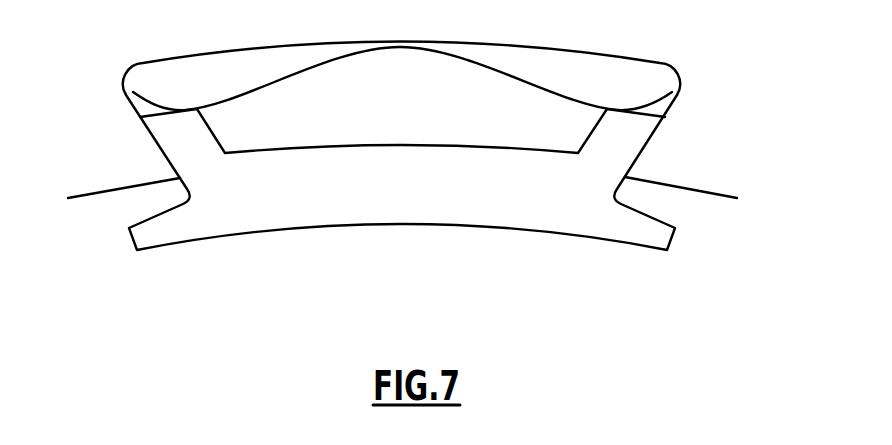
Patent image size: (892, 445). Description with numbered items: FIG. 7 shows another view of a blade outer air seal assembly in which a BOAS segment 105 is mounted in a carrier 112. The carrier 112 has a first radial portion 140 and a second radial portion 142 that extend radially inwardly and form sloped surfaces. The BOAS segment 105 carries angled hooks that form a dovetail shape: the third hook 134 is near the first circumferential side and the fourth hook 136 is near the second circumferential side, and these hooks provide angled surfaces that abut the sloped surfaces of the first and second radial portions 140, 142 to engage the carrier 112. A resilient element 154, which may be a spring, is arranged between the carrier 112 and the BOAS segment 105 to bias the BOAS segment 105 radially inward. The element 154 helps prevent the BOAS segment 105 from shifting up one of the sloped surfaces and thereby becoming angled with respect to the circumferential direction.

The BOAS segment 105 is at (290, 210).
The carrier 112 is at (700, 120).
The third hook 134 is at (183, 143).
The fourth hook 136 is at (638, 130).
The first radial portion 140 is at (108, 152).
The second radial portion 142 is at (707, 152).
The resilient element 154 is at (289, 80).